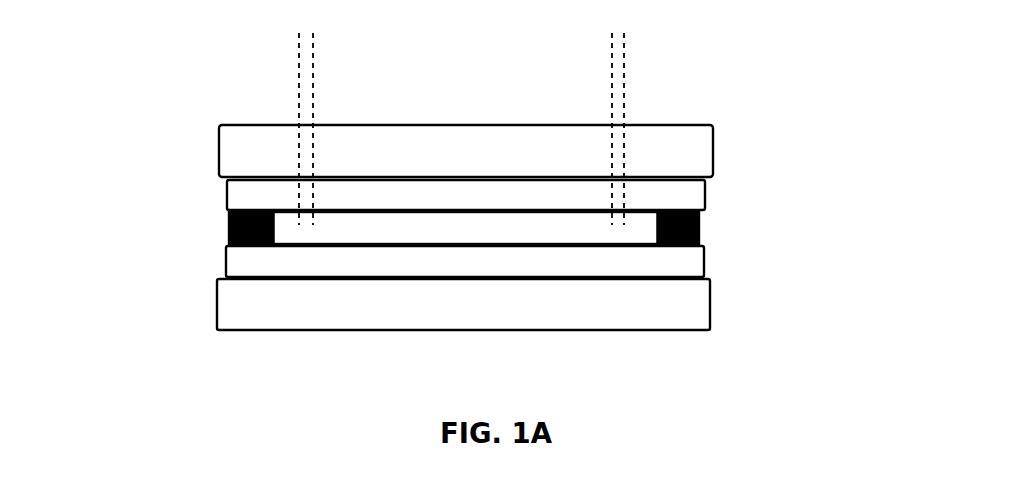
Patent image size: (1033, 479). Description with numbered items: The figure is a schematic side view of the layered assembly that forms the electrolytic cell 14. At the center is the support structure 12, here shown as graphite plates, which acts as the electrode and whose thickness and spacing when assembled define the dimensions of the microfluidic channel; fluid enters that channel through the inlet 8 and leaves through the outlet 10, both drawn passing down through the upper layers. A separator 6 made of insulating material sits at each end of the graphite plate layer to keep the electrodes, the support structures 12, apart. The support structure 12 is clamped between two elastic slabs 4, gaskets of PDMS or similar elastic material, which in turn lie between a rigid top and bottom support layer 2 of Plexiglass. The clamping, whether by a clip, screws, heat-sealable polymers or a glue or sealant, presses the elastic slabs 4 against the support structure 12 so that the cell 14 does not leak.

The support layer 2 is at (219, 142).
The elastic slab 4 is at (705, 197).
The separator 6 is at (770, 244).
The inlet 8 is at (338, 119).
The outlet 10 is at (663, 119).
The support structure 12 is at (464, 227).
The cell 14 is at (737, 75).